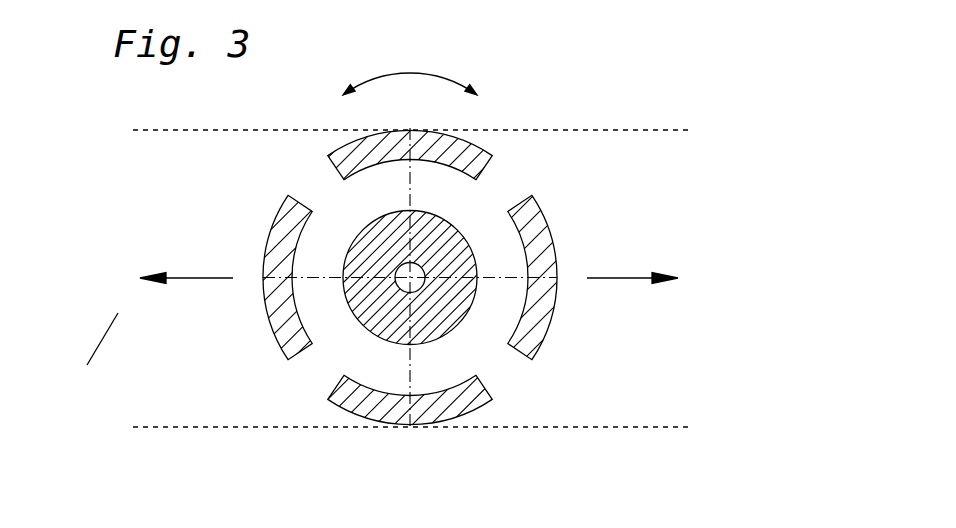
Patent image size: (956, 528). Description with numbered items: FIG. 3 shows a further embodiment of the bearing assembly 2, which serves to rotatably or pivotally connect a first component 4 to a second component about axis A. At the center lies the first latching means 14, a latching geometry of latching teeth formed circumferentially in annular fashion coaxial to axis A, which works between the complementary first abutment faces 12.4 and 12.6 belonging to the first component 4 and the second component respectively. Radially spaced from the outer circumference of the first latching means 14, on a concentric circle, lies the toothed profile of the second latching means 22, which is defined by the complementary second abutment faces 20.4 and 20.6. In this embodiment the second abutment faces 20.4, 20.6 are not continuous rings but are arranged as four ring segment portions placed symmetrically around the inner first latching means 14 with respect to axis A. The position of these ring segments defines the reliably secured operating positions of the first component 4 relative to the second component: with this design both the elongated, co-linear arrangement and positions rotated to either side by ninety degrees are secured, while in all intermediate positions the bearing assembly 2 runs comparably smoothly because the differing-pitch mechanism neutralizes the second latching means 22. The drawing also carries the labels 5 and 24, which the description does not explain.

The bearing assembly 2 is at (708, 168).
The first component 4 is at (185, 275).
The gap 5 is at (94, 355).
The first latching means 14 is at (413, 267).
The first abutment face 12.4 is at (413, 275).
The first abutment face 12.6 is at (463, 243).
The second latching means 22 is at (414, 275).
The second abutment face 20.4 is at (414, 275).
The second abutment face 20.6 is at (414, 275).
The lower segment 24 is at (486, 373).